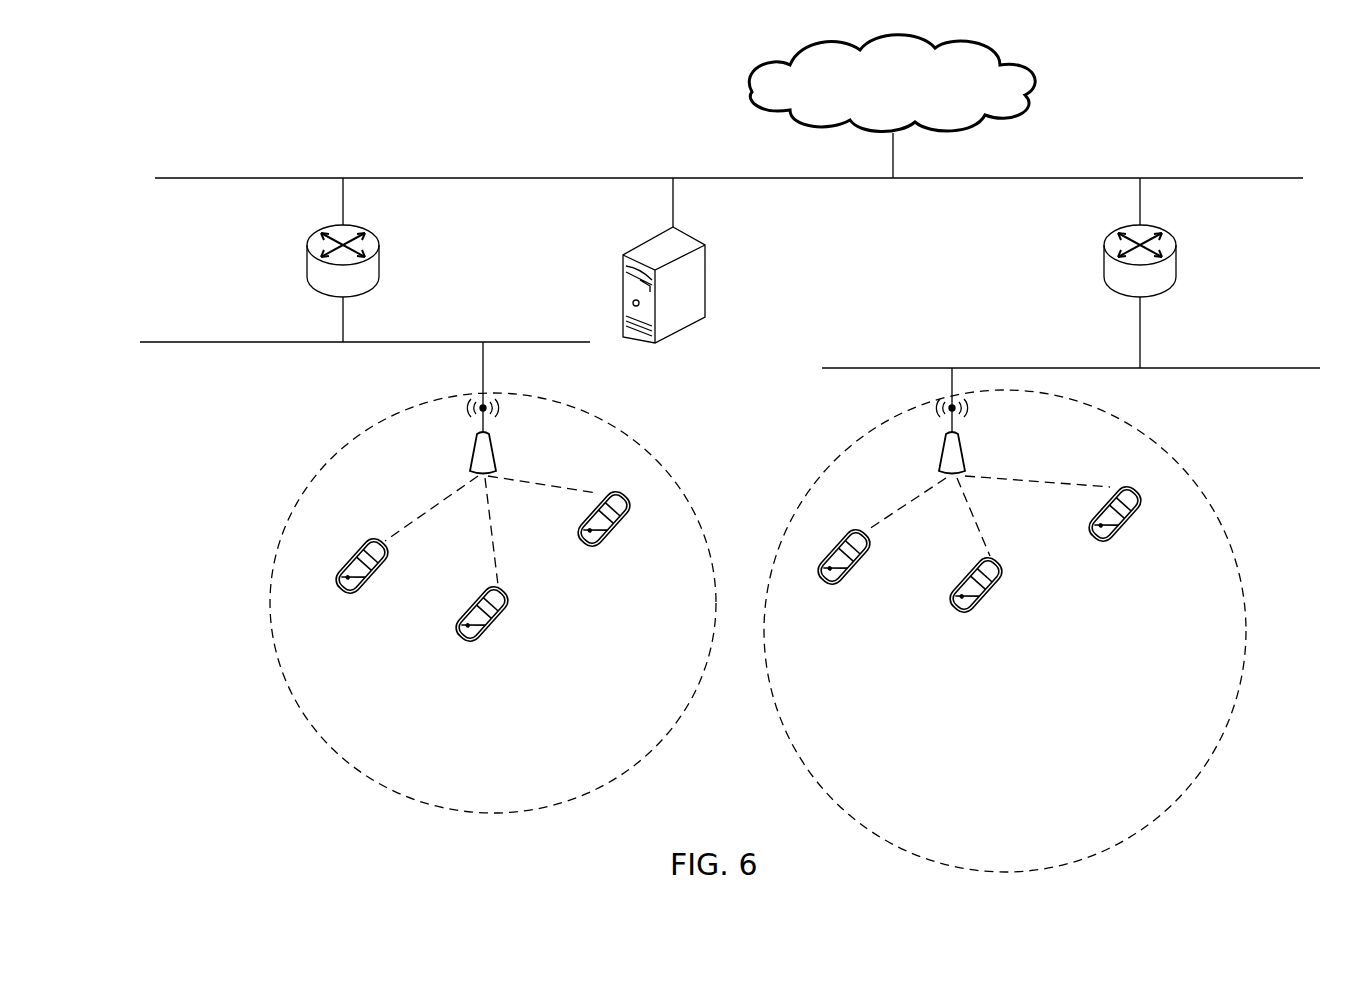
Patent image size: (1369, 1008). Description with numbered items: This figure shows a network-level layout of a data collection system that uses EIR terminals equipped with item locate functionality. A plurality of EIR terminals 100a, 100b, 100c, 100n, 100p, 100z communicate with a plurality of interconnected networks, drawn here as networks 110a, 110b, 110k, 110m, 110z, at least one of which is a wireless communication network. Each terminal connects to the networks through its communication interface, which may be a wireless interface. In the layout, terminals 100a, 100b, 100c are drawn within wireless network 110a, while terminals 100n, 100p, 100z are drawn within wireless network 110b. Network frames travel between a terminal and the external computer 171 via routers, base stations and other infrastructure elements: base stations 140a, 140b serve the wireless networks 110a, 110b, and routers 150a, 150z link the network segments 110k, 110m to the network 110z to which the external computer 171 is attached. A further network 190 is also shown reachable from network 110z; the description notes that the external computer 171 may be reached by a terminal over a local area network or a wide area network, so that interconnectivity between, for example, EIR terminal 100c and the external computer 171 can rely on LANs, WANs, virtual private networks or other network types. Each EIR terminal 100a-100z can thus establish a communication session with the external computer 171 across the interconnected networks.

The network cloud 190 is at (892, 106).
The network 110z is at (729, 158).
The network 110k is at (365, 321).
The network 110m is at (1071, 350).
The router 150a is at (375, 260).
The router 150z is at (1174, 273).
The external computer 171 is at (670, 275).
The network 110a is at (479, 603).
The network 110b is at (987, 631).
The access point 140a is at (491, 463).
The access point 140b is at (988, 462).
The EIR terminal 100a is at (332, 565).
The EIR terminal 100b is at (634, 529).
The EIR terminal 100c is at (506, 629).
The EIR terminal 100n is at (833, 572).
The EIR terminal 100p is at (999, 602).
The EIR terminal 100z is at (1123, 526).